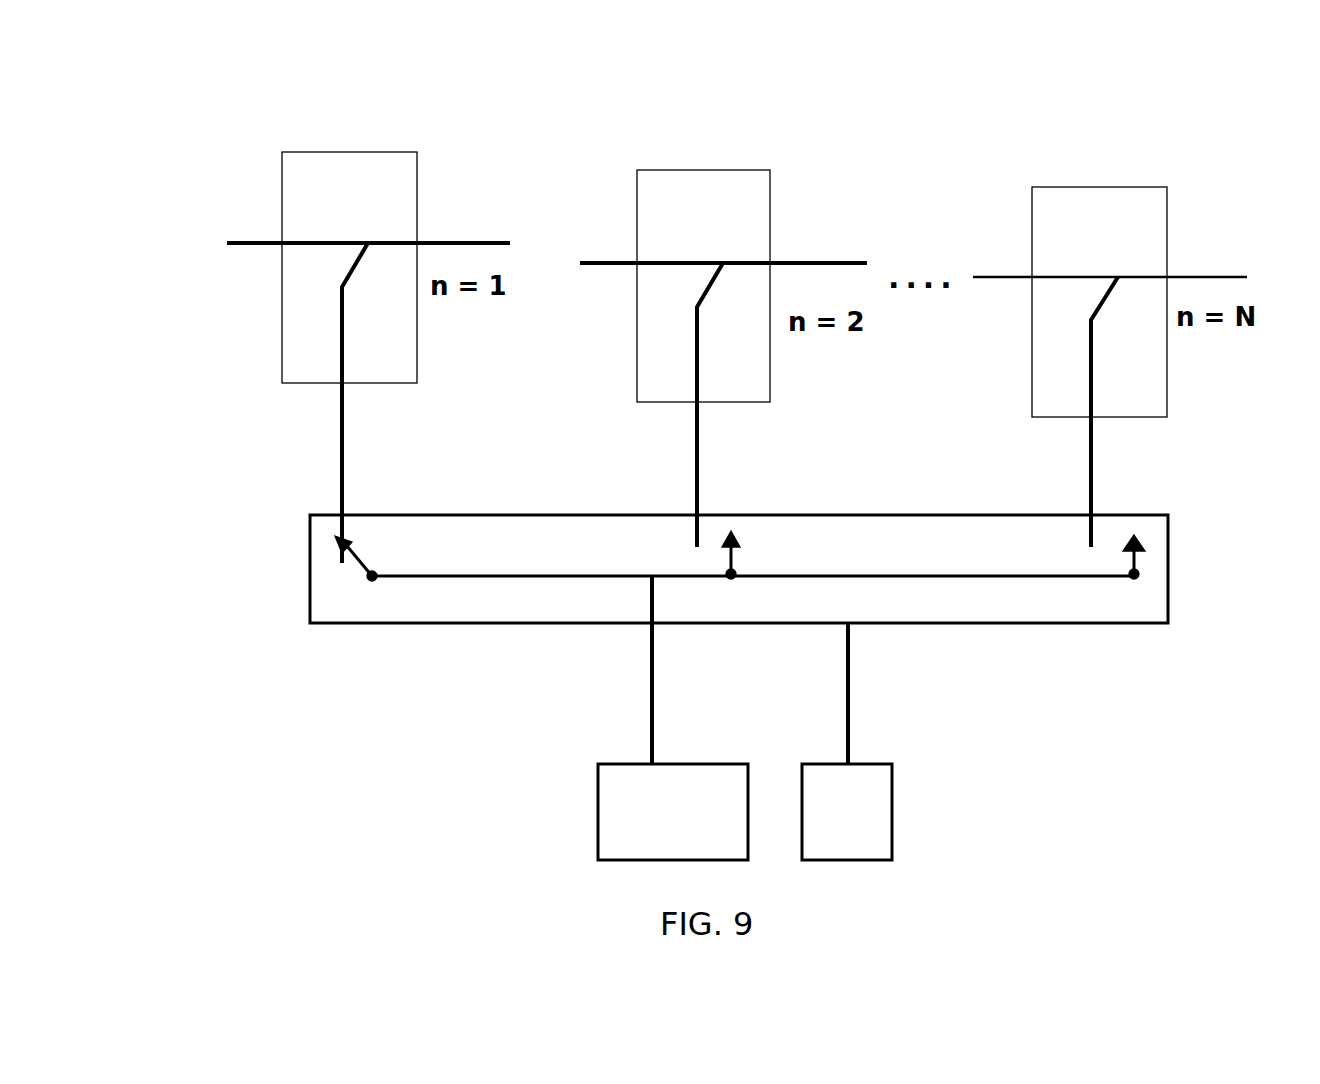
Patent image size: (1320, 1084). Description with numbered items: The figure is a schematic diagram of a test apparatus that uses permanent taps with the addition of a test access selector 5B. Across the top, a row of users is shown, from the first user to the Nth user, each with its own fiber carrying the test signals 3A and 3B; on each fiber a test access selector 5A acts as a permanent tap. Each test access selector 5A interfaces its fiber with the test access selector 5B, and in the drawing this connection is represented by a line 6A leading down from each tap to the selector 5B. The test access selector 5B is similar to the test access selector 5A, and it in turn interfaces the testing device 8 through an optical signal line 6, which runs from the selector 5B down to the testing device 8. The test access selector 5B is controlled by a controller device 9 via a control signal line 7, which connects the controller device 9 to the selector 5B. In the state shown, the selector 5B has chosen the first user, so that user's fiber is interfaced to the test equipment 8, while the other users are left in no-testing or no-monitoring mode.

The test signal 3A is at (243, 222).
The test signal 3B is at (443, 221).
The test access selector 5A is at (332, 138).
The test access selector 5B is at (295, 546).
The sensor lead line 6A is at (750, 403).
The optical signal line 6 is at (640, 693).
The control signal line 7 is at (863, 698).
The testing device 8 is at (583, 793).
The controller device 9 is at (905, 830).